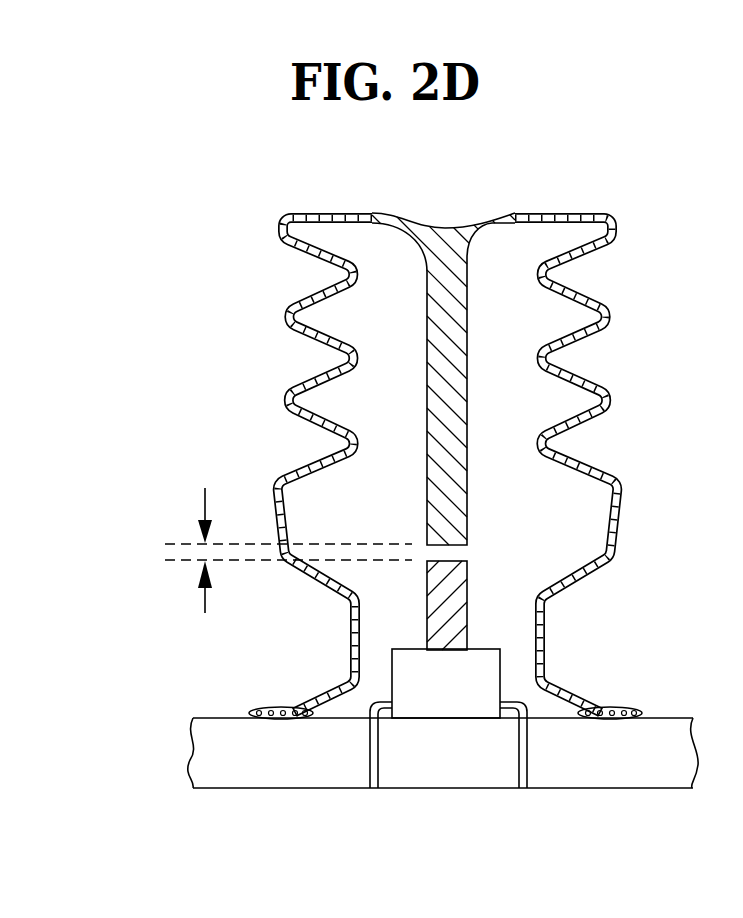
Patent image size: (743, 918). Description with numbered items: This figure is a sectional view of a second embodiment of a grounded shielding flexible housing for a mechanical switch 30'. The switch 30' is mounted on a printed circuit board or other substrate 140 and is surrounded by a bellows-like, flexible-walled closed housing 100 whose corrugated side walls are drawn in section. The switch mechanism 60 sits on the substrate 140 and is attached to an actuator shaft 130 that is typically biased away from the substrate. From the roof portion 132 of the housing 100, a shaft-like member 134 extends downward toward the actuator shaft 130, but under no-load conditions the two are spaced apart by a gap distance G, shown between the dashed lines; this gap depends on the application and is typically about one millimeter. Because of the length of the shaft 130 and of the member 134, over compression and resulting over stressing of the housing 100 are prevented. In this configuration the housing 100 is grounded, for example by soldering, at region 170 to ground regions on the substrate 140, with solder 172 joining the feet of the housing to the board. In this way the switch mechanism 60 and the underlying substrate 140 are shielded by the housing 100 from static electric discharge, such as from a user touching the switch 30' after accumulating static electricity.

The mechanical switch 30' is at (435, 473).
The flexible-walled closed housing 100 is at (625, 294).
The roof portion 132 is at (486, 228).
The shaft-like member 134 is at (468, 387).
The actuator shaft 130 is at (468, 593).
The gap distance G is at (288, 569).
The switch mechanism 60 is at (438, 695).
The substrate 140 is at (608, 773).
The grounding region 170 is at (305, 700).
The solder 172 is at (255, 708).